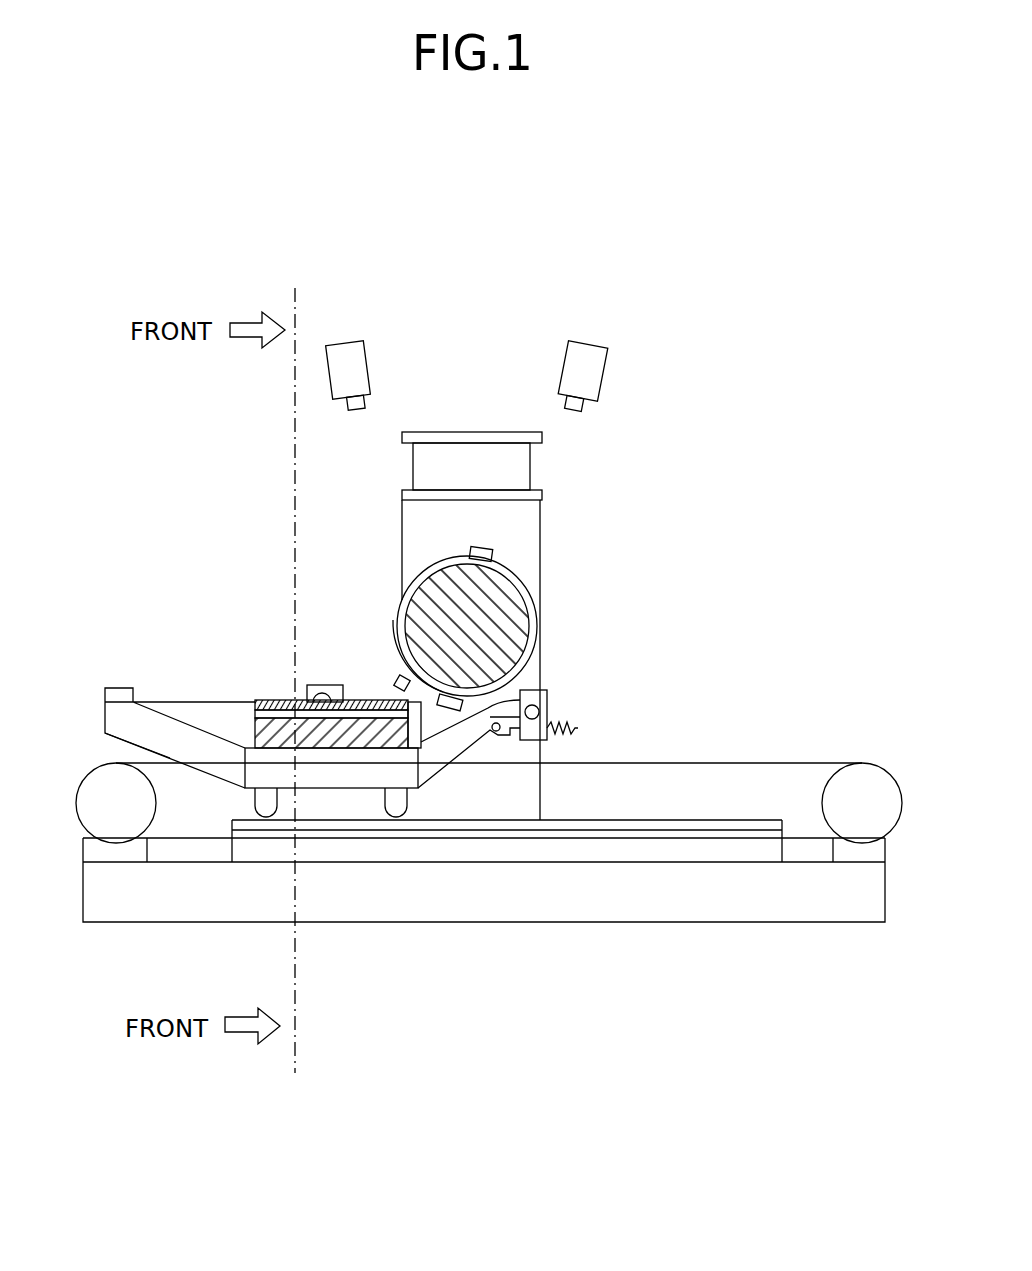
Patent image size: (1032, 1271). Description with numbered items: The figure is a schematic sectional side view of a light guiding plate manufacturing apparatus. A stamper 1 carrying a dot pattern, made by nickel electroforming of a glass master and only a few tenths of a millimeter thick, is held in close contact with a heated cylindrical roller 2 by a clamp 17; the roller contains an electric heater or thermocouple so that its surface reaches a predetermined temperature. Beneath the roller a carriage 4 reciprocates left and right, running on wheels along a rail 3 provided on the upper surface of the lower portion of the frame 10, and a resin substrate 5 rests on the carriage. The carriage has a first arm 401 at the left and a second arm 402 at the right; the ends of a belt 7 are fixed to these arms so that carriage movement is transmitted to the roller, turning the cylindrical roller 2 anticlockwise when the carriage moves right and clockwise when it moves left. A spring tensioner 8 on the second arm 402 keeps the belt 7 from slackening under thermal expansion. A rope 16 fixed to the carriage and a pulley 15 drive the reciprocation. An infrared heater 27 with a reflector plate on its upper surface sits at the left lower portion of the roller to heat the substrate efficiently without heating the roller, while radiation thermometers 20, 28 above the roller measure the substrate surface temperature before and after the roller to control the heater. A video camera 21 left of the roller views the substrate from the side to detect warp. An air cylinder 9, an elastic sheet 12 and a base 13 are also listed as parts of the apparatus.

The stamper 1 is at (397, 618).
The cylindrical roller 2 is at (505, 597).
The rail 3 is at (272, 830).
The carriage 4 is at (255, 757).
The resin substrate 5 is at (357, 700).
The belt 7 is at (158, 700).
The tensioner 8 is at (547, 713).
The air cylinder 9 is at (472, 432).
The frame 10 is at (445, 913).
The elastic sheet 12 is at (283, 700).
The base 13 is at (260, 716).
The pulley 15 is at (868, 778).
The rope 16 is at (668, 762).
The clamp 17 is at (485, 547).
The radiation thermometer 20 is at (342, 340).
The video camera 21 is at (323, 685).
The infrared heater 27 is at (397, 683).
The radiation thermometer 28 is at (595, 340).
The first arm 401 is at (122, 727).
The second arm 402 is at (500, 703).